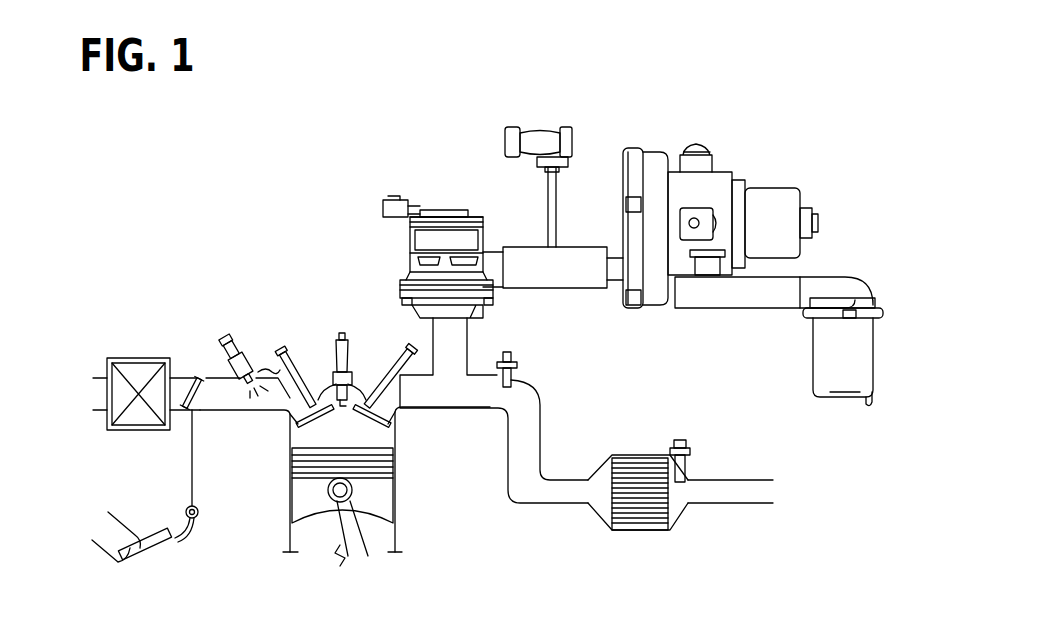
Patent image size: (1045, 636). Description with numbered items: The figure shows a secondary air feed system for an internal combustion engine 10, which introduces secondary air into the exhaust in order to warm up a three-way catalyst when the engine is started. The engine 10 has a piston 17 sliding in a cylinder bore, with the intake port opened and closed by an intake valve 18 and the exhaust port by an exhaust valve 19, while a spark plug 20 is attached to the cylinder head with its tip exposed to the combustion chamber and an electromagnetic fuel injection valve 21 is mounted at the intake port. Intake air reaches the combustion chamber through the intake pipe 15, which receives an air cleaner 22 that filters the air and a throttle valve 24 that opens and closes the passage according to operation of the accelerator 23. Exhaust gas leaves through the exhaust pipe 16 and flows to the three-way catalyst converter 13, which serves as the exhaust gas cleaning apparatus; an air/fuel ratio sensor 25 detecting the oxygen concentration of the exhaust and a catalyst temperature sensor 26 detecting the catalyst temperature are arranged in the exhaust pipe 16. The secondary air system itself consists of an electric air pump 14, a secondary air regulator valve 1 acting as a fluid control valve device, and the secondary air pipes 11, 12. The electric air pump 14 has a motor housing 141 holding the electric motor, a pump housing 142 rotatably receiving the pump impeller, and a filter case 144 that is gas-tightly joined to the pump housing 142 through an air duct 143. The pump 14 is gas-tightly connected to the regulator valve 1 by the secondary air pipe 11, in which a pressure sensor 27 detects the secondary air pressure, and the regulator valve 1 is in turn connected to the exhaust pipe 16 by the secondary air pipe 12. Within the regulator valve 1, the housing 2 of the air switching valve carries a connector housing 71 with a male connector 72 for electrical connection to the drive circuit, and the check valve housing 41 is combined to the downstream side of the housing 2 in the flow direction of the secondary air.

The secondary air regulator valve 1 is at (495, 210).
The housing 2 is at (410, 248).
The engine 10 is at (274, 494).
The secondary air pipe 11 is at (556, 290).
The secondary air pipe 12 is at (468, 334).
The three-way catalyst converter 13 is at (640, 458).
The electric air pump 14 is at (771, 147).
The intake pipe 15 is at (237, 412).
The exhaust pipe 16 is at (506, 457).
The piston 17 is at (386, 490).
The intake valve 18 is at (320, 400).
The exhaust valve 19 is at (364, 400).
The spark plug 20 is at (337, 355).
The electromagnetic fuel injection valve 21 is at (248, 360).
The air cleaner 22 is at (142, 362).
The accelerator 23 is at (166, 547).
The throttle valve 24 is at (201, 378).
The air/fuel ratio sensor 25 is at (506, 388).
The catalyst temperature sensor 26 is at (686, 466).
The pressure sensor 27 is at (533, 130).
The housing 41 is at (488, 311).
The connector housing 71 is at (420, 210).
The male connector 72 is at (383, 210).
The motor housing 141 is at (784, 190).
The pump housing 142 is at (650, 150).
The air duct 143 is at (718, 310).
The filter case 144 is at (813, 366).